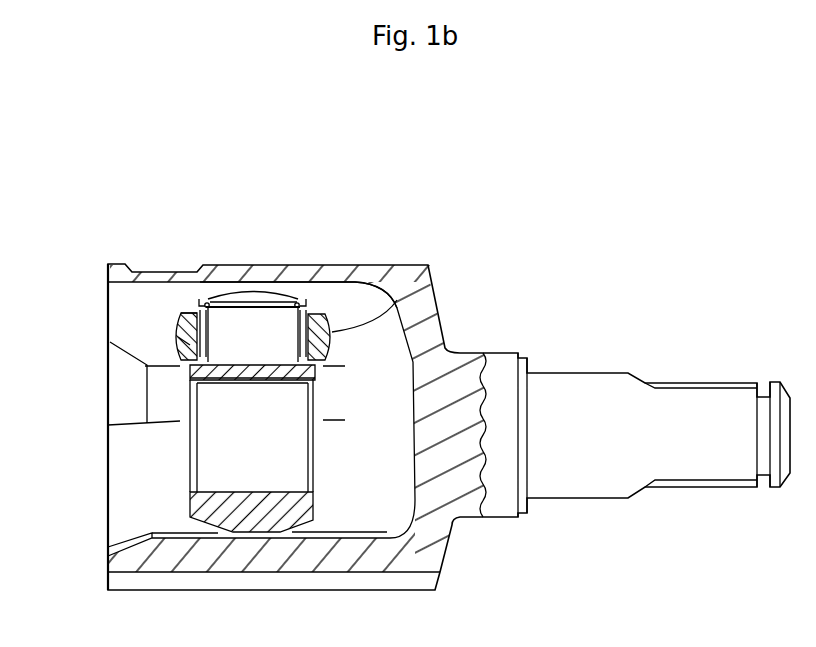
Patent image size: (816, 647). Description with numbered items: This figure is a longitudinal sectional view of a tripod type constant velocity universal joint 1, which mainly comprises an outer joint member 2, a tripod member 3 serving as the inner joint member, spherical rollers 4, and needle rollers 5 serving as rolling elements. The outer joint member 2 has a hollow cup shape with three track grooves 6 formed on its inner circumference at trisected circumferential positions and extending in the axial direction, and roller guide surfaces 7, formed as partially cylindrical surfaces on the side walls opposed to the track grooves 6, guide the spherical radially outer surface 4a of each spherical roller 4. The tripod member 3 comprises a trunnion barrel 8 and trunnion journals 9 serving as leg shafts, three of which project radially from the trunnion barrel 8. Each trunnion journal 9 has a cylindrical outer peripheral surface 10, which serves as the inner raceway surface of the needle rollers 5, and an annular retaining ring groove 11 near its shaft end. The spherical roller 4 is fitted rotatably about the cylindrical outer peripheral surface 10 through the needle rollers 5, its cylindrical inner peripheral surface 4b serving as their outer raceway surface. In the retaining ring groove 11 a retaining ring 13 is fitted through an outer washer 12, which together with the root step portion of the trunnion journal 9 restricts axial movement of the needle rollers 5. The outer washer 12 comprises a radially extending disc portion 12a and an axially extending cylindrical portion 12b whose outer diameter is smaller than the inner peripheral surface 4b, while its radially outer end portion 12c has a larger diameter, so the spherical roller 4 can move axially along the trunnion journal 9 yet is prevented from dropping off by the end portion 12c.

The tripod type constant velocity universal joint 1 is at (433, 242).
The outer joint member 2 is at (392, 264).
The tripod member 3 is at (258, 515).
The spherical roller 4 is at (336, 292).
The spherical radially outer surface 4a is at (395, 296).
The inner peripheral surface 4b is at (333, 355).
The needle rollers 5 is at (173, 340).
The track grooves 6 is at (358, 300).
The roller guide surfaces 7 is at (150, 345).
The trunnion barrel 8 is at (296, 512).
The trunnion journal 9 is at (245, 294).
The cylindrical outer peripheral surface 10 is at (140, 368).
The retaining ring groove 11 is at (220, 296).
The outer washer 12 is at (318, 312).
The disc portion 12a is at (177, 322).
The cylindrical portion 12b is at (196, 303).
The end portion 12c is at (179, 312).
The retaining ring 13 is at (298, 300).